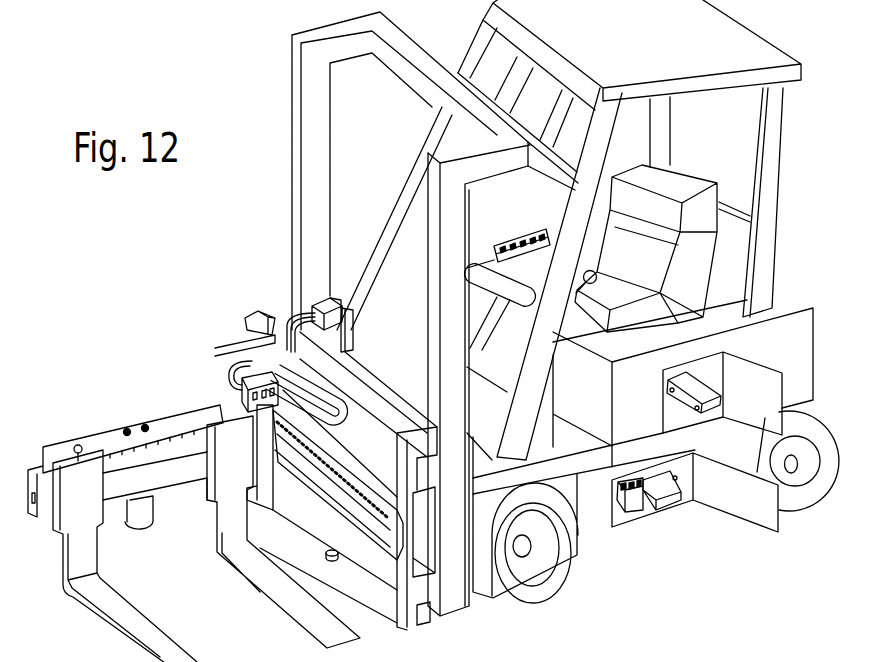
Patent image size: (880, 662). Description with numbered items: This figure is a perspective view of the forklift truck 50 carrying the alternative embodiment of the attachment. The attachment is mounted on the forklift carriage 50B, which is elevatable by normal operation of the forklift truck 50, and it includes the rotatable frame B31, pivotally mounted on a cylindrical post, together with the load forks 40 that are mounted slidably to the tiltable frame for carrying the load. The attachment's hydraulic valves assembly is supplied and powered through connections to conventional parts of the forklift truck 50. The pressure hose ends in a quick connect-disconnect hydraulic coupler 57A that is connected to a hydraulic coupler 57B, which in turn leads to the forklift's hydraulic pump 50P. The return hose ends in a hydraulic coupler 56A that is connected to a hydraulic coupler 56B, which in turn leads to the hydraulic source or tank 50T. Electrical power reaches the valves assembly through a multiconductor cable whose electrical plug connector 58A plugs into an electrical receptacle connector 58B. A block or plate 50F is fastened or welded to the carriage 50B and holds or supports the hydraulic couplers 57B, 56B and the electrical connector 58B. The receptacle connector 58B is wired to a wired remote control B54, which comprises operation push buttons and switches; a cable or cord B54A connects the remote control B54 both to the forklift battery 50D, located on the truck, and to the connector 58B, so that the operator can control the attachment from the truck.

The forklift truck 50 is at (778, 260).
The forklift carriage 50B is at (417, 605).
The forklift battery 50D is at (702, 395).
The block or plate 50F is at (323, 294).
The hydraulic pump 50P is at (645, 493).
The hydraulic source or tank 50T is at (668, 497).
The hydraulic coupler 56A is at (263, 346).
The hydraulic coupler 56B is at (337, 302).
The hydraulic coupler 57A is at (302, 305).
The hydraulic coupler 57B is at (319, 305).
The electrical plug connector 58A is at (355, 337).
The electrical receptacle connector 58B is at (346, 306).
The rotatable frame B31 is at (108, 438).
The wired remote control B54 is at (510, 254).
The cable or cord B54A is at (553, 235).
The load forks 40 is at (265, 593).